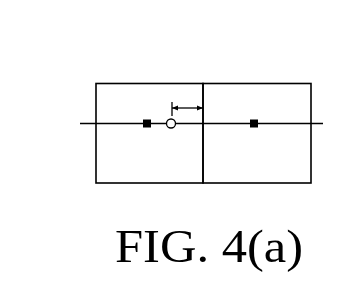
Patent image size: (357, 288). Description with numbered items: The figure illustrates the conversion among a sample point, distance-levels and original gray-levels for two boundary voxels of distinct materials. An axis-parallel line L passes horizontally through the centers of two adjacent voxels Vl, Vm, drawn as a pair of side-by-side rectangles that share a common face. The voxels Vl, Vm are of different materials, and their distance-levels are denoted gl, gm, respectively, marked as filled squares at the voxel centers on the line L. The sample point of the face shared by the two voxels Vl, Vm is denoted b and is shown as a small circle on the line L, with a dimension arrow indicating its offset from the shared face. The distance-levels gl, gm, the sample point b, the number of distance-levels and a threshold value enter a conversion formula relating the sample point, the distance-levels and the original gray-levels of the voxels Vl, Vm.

The axis-parallel line L is at (82, 126).
The voxel Vl is at (155, 83).
The voxel Vm is at (263, 83).
The distance-level gl is at (140, 112).
The distance-level gm is at (247, 112).
The sample point b is at (187, 102).